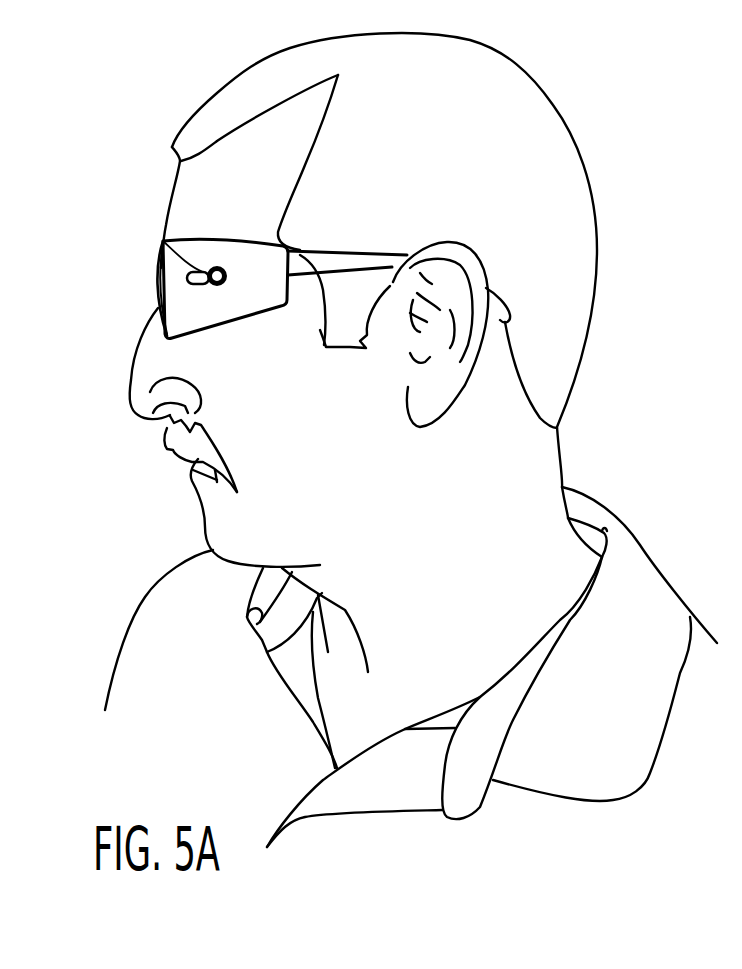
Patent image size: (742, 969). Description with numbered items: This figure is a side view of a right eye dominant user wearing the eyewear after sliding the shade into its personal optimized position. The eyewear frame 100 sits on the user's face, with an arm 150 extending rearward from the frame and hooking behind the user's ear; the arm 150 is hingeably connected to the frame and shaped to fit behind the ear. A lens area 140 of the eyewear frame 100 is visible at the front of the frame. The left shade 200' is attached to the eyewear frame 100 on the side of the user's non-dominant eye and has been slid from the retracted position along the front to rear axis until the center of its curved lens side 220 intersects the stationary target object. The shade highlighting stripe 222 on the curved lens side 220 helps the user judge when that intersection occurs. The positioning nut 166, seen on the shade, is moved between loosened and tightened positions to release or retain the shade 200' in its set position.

The eyewear frame 100 is at (127, 263).
The lens area 140 is at (158, 308).
The arm 150 is at (370, 260).
The positioning nut 166 is at (190, 274).
The left shade 200' is at (171, 195).
The curved lens side 220 is at (157, 270).
The shade highlighting stripe 222 is at (114, 288).